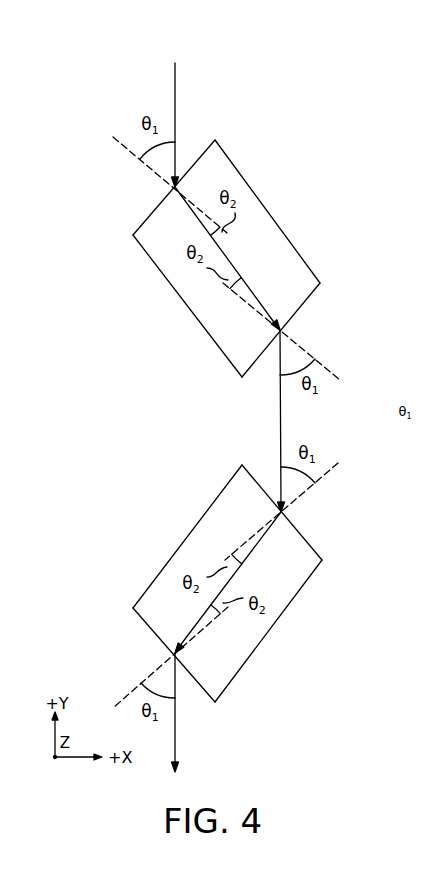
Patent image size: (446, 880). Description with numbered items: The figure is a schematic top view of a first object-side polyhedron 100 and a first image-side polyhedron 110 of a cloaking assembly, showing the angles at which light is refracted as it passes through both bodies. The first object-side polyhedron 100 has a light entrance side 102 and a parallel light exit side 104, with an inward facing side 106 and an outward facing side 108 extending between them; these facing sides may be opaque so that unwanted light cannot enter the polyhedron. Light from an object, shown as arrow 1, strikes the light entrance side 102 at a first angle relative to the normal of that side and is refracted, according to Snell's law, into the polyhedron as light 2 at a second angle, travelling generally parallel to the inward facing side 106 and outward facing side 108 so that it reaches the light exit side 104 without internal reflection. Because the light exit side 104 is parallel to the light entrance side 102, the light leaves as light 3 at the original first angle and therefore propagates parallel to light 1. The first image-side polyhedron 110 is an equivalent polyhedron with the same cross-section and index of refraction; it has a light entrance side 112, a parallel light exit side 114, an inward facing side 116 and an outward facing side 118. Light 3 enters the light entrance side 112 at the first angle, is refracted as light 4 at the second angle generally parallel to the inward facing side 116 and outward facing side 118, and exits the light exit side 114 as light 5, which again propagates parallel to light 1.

The light 1 is at (177, 77).
The light 2 is at (248, 285).
The light 3 is at (280, 415).
The light 4 is at (243, 562).
The light 5 is at (175, 752).
The first object-side polyhedron 100 is at (267, 234).
The light entrance side 102 is at (198, 142).
The light exit side 104 is at (315, 293).
The inward facing side 106 is at (178, 297).
The outward facing side 108 is at (252, 185).
The first image-side polyhedron 110 is at (255, 604).
The light entrance side 112 is at (317, 548).
The light exit side 114 is at (203, 693).
The inward facing side 116 is at (192, 528).
The outward facing side 118 is at (300, 592).